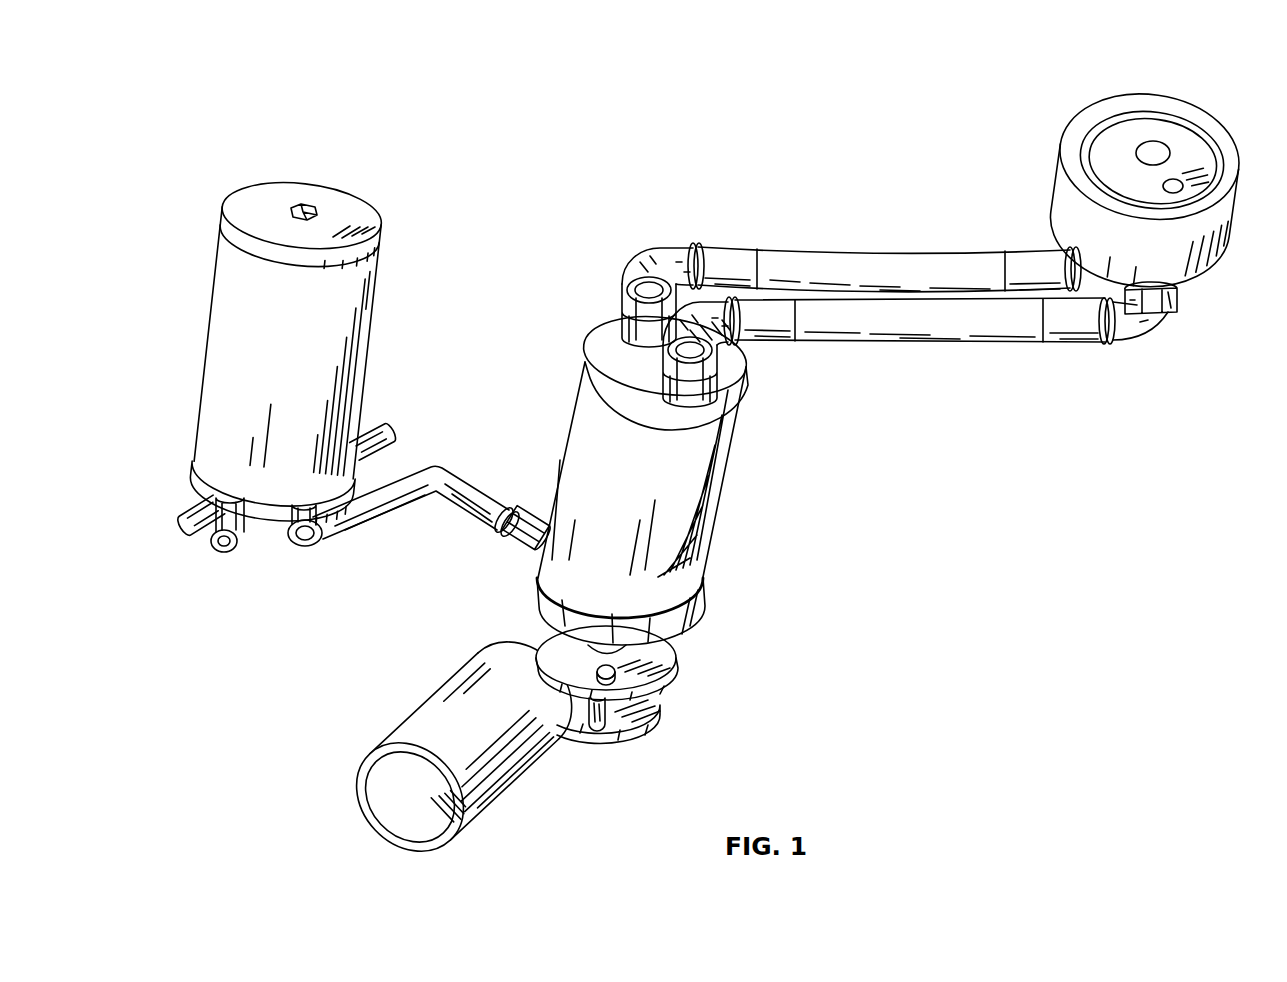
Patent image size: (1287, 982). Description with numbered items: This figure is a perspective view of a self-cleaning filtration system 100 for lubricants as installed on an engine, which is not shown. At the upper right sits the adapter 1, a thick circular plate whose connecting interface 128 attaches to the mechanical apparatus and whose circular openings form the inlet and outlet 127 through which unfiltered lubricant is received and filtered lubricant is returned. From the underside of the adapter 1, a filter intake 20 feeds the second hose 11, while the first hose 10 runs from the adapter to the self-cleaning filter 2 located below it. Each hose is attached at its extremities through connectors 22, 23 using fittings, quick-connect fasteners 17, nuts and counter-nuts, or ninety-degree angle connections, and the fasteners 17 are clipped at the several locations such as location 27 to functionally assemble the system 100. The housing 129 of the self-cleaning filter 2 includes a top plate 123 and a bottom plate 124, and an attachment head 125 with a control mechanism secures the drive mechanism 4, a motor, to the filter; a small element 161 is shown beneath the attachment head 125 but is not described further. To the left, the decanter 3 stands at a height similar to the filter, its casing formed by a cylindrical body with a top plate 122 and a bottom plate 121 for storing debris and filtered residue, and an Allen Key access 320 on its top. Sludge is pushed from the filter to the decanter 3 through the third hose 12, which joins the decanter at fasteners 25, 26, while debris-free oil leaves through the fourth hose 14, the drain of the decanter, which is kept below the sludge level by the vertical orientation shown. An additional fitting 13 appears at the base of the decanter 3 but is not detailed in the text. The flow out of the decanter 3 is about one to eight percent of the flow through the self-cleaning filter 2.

The self-cleaning filtration system 100 is at (234, 120).
The adapter 1 is at (1238, 220).
The self-cleaning filter 2 is at (722, 494).
The decanter 3 is at (372, 360).
The drive mechanism 4 is at (505, 792).
The first hose 10 is at (872, 252).
The second hose 11 is at (910, 342).
The third hose 12 is at (470, 472).
The fitting 13 is at (190, 520).
The fourth hose 14 is at (394, 442).
The quick-connect fasteners 17 is at (210, 544).
The filter intake 20 is at (1180, 296).
The connector 22 is at (632, 282).
The connector 23 is at (722, 345).
The fastener of the decanter 25 is at (300, 536).
The fastener of the decanter 26 is at (230, 552).
The connector location 27 is at (524, 508).
The bottom plate 121 is at (192, 466).
The top plate 122 is at (312, 212).
The top plate 123 is at (738, 404).
The bottom plate 124 is at (702, 592).
The attachment head 125 is at (680, 666).
The inlet and outlet openings 127 is at (1167, 152).
The connecting interface 128 is at (1126, 108).
The housing 129 is at (732, 454).
The drain tube 161 is at (593, 728).
The Allen Key access 320 is at (304, 212).